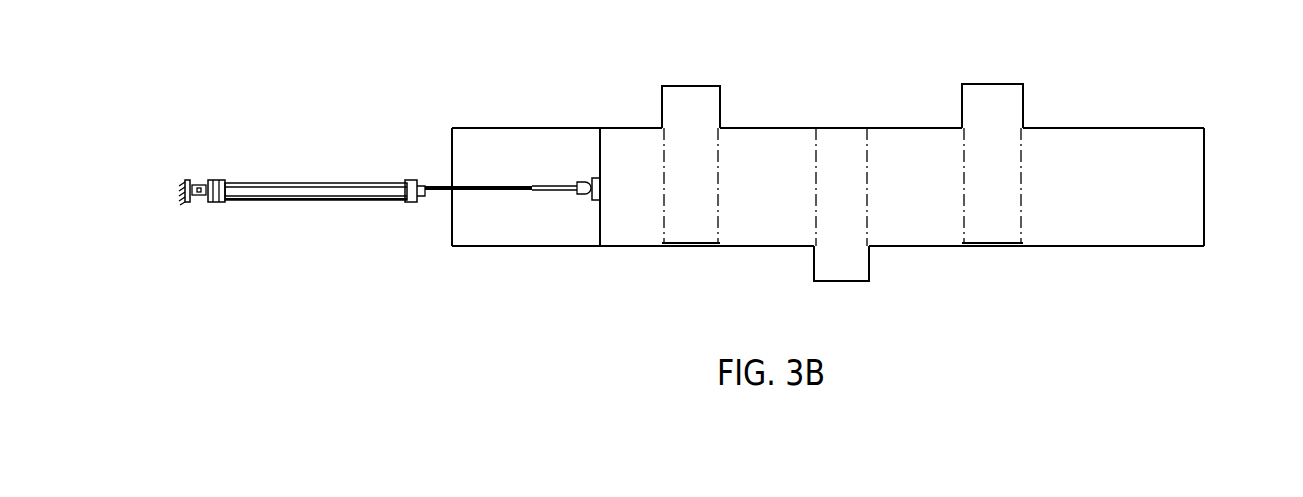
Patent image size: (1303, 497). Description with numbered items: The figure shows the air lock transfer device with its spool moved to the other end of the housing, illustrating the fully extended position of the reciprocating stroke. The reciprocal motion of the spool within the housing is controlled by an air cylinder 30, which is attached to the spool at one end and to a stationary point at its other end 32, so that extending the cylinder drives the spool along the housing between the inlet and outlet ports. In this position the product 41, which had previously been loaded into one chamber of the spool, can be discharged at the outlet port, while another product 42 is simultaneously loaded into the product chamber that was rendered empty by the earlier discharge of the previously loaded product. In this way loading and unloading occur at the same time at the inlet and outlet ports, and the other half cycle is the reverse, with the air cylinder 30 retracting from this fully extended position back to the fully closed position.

The air cylinder 30 is at (283, 182).
The stationary point end 32 is at (1206, 180).
The product 41 is at (812, 283).
The product 42 is at (1023, 86).